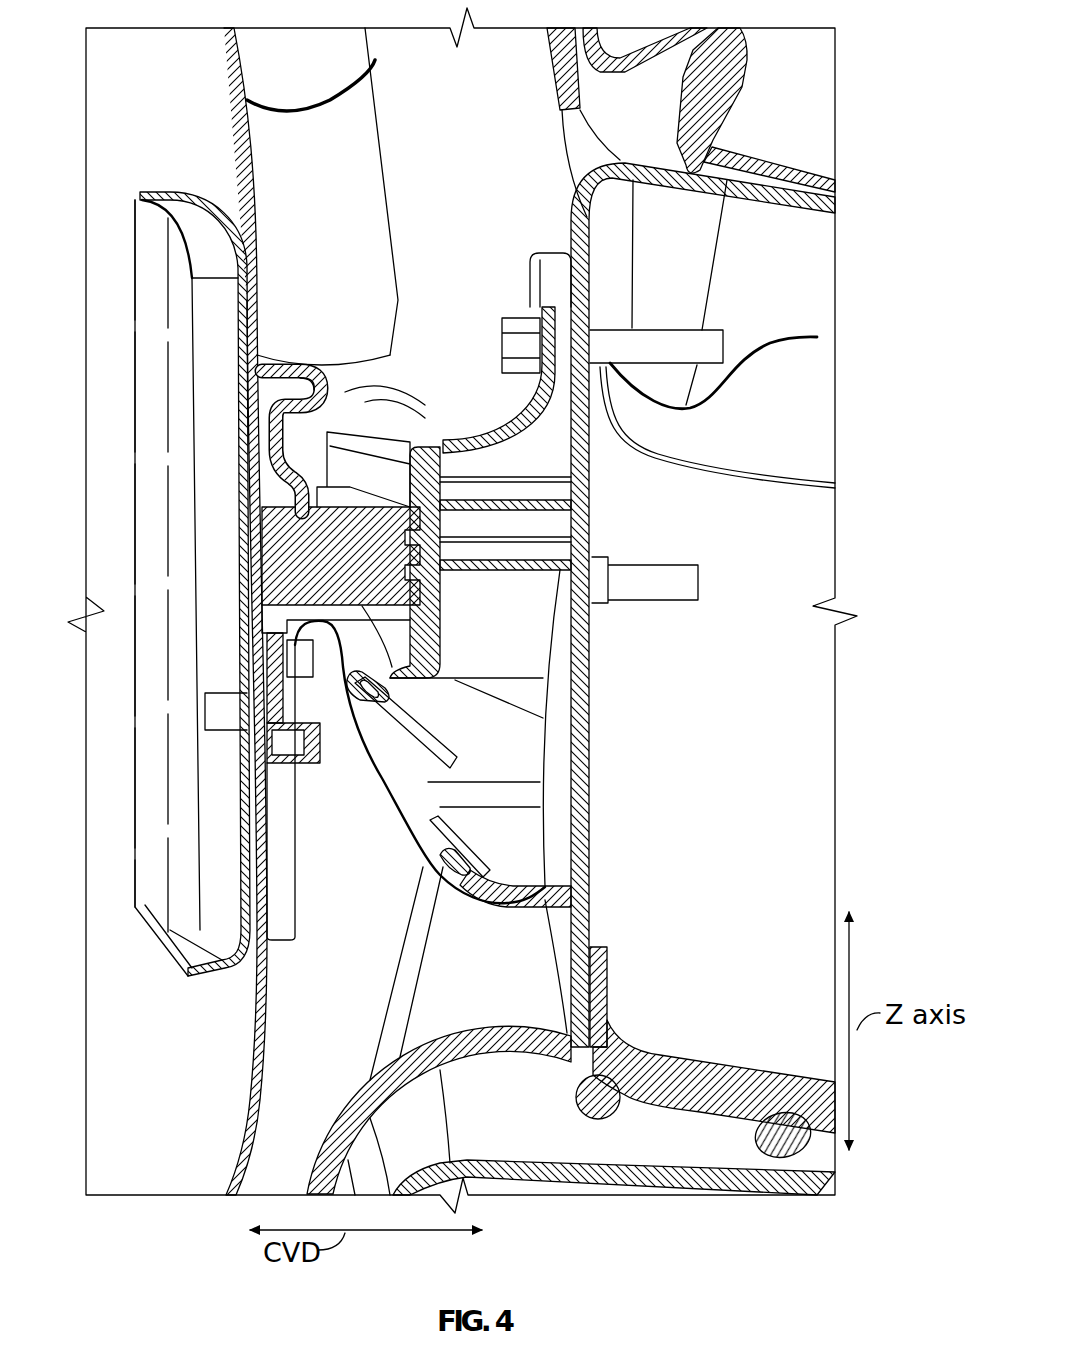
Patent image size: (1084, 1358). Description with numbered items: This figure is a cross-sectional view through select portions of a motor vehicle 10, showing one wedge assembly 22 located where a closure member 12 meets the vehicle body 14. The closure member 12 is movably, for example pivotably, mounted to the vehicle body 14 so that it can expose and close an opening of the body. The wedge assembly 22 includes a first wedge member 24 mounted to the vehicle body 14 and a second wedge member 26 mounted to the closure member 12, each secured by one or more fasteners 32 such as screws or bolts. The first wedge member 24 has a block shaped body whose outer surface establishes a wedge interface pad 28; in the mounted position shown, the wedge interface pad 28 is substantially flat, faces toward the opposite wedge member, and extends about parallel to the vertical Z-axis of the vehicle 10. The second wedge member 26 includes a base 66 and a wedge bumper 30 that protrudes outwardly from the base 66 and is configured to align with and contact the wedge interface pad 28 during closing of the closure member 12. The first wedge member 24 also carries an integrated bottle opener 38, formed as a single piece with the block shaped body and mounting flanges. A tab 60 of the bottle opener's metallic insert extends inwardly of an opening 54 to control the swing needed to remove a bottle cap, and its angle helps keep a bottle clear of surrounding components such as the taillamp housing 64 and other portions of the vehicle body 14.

The motor vehicle 10 is at (851, 42).
The closure member 12 is at (240, 42).
The vehicle body 14 is at (818, 727).
The wedge assembly 22 is at (402, 353).
The first wedge member 24 is at (450, 415).
The second wedge member 26 is at (277, 348).
The wedge interface pad 28 is at (383, 463).
The wedge bumper 30 is at (335, 497).
The fasteners 32 is at (700, 352).
The bottle opener 38 is at (375, 792).
The opening 54 is at (432, 767).
The tab 60 is at (422, 728).
The taillamp housing 64 is at (523, 1028).
The base 66 is at (322, 380).